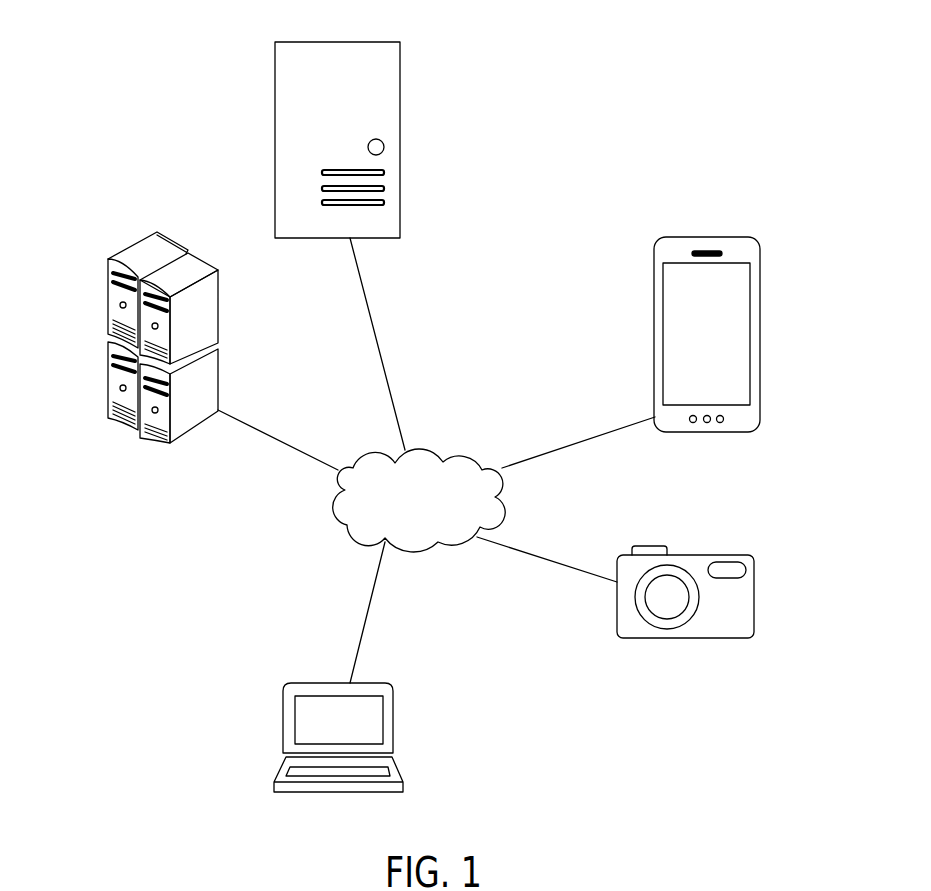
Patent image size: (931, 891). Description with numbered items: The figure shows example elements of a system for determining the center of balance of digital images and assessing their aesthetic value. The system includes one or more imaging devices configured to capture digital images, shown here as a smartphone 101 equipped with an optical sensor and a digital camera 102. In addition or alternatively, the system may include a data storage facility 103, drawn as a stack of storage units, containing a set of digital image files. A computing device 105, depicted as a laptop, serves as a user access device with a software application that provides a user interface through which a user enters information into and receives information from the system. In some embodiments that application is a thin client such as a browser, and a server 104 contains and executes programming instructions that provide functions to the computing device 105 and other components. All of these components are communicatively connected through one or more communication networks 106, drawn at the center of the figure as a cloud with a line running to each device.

The smartphone 101 is at (758, 327).
The digital camera 102 is at (755, 572).
The data storage facility 103 is at (108, 283).
The server 104 is at (275, 63).
The computing device 105 is at (273, 777).
The communication networks 106 is at (468, 452).